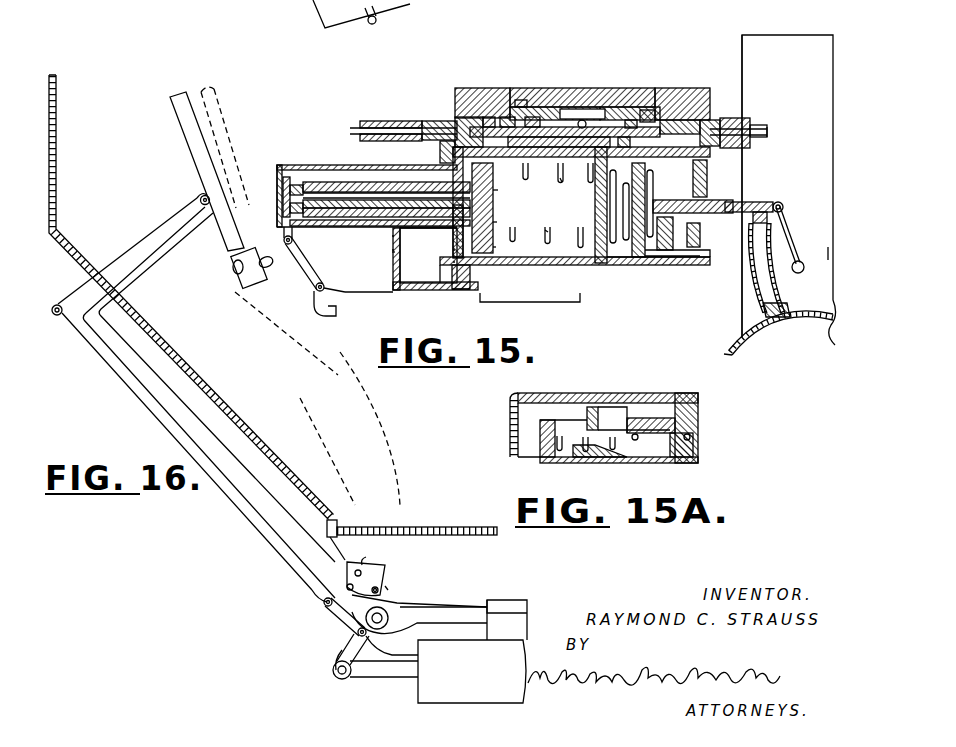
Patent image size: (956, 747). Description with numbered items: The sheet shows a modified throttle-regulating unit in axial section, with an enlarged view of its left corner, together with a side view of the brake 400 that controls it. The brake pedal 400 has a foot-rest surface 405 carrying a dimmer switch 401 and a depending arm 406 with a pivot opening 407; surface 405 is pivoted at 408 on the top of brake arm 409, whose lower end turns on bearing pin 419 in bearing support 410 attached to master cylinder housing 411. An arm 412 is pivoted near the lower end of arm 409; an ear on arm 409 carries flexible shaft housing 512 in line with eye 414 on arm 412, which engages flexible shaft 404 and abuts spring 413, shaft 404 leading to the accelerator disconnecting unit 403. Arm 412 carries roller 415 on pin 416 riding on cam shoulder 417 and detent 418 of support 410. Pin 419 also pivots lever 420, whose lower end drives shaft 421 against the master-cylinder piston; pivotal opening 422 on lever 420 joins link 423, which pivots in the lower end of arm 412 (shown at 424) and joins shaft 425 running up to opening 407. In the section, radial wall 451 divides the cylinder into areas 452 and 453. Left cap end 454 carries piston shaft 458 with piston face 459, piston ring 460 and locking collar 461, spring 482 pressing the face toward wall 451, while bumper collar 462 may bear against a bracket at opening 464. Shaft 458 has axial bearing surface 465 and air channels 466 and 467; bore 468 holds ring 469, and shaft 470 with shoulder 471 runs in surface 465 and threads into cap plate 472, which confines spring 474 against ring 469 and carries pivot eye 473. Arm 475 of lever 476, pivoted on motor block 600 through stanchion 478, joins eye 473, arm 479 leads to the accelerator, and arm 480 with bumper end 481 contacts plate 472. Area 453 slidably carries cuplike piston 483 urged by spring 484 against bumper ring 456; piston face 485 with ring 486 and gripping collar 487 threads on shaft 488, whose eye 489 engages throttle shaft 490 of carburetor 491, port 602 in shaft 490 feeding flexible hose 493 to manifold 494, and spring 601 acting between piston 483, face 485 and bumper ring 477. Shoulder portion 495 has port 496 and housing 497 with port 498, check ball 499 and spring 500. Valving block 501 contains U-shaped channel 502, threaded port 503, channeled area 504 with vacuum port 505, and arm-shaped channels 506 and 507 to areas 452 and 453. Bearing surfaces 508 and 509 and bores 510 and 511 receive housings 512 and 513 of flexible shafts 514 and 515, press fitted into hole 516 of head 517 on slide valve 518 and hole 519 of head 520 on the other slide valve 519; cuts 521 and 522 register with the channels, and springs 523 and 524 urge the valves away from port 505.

In FIG. 16, the brake pedal 400 is at (173, 133).
In FIG. 16, the dimmer switch 401 is at (235, 266).
In FIG. 15, the accelerator disconnecting unit 403 is at (730, 44).
In FIG. 15, the flexible shaft 404 is at (372, 24).
In FIG. 16, the flexible shaft 404 is at (335, 522).
In FIG. 16, the foot-rest surface 405 is at (195, 92).
In FIG. 16, the depending arm 406 is at (134, 229).
In FIG. 16, the pivot opening 407 is at (57, 316).
In FIG. 16, the pivot 408 is at (198, 185).
In FIG. 16, the brake arm 409 is at (144, 270).
In FIG. 16, the bearing support 410 is at (402, 602).
In FIG. 16, the master cylinder housing 411 is at (477, 602).
In FIG. 16, the arm 412 is at (340, 618).
In FIG. 16, the spring 413 is at (314, 590).
In FIG. 16, the eye 414 is at (385, 574).
In FIG. 16, the roller 415 is at (380, 570).
In FIG. 16, the pin 416 is at (377, 588).
In FIG. 16, the cam shoulder 417 is at (355, 633).
In FIG. 16, the detent 418 is at (387, 589).
In FIG. 16, the bearing pin 419 is at (401, 626).
In FIG. 16, the lever 420 is at (402, 652).
In FIG. 16, the shaft 421 is at (377, 676).
In FIG. 16, the pivotal opening 422 is at (334, 676).
In FIG. 16, the link 423 is at (332, 654).
In FIG. 16, the pivot 424 is at (320, 604).
In FIG. 16, the shaft 425 is at (242, 547).
In FIG. 15, the radial wall 451 is at (577, 279).
In FIG. 15, the cylinder area 452 is at (517, 267).
In FIG. 15, the cylinder area 453 is at (451, 230).
In FIG. 15, the left cap end 454 is at (453, 250).
In FIG. 15, the right bumper ring 456 is at (690, 245).
In FIG. 15, the piston shaft 458 is at (360, 224).
In FIG. 15A, the piston shaft 458 is at (700, 405).
In FIG. 15, the piston face 459 is at (497, 222).
In FIG. 15, the piston ring 460 is at (494, 247).
In FIG. 15, the locking collar 461 is at (498, 159).
In FIG. 15, the bumper collar 462 is at (342, 152).
In FIG. 15A, the bumper collar 462 is at (608, 405).
In FIG. 15, the opening 464 is at (392, 236).
In FIG. 15, the bearing surface 465 is at (393, 250).
In FIG. 15, the air channel 466 is at (446, 171).
In FIG. 15A, the air channel 466 is at (698, 437).
In FIG. 15, the air channel 467 is at (350, 252).
In FIG. 15, the bore 468 is at (498, 192).
In FIG. 15A, the bore 468 is at (728, 472).
In FIG. 15A, the ring 469 is at (621, 441).
In FIG. 15, the shaft 470 is at (497, 205).
In FIG. 15A, the shaft 470 is at (560, 462).
In FIG. 15, the raised shoulder 471 is at (386, 192).
In FIG. 15A, the raised shoulder 471 is at (615, 459).
In FIG. 15, the cap plate 472 is at (283, 199).
In FIG. 15A, the cap plate 472 is at (550, 417).
In FIG. 15, the pivot eye 473 is at (286, 230).
In FIG. 15, the spring 474 is at (292, 164).
In FIG. 15A, the spring 474 is at (587, 384).
In FIG. 15, the arm 475 is at (290, 271).
In FIG. 15, the lever 476 is at (342, 276).
In FIG. 15, the bumper ring 477 is at (700, 227).
In FIG. 15, the stanchion 478 is at (369, 281).
In FIG. 15, the arm 479 is at (341, 307).
In FIG. 15, the arm 480 is at (384, 164).
In FIG. 15A, the arm 480 is at (688, 394).
In FIG. 15, the bumper end 481 is at (283, 179).
In FIG. 15A, the bumper end 481 is at (510, 405).
In FIG. 15, the spring 482 is at (553, 202).
In FIG. 15, the cuplike piston 483 is at (693, 211).
In FIG. 15, the spring 484 is at (553, 229).
In FIG. 15, the piston face 485 is at (655, 268).
In FIG. 15, the piston ring 486 is at (690, 170).
In FIG. 15, the gripping collar 487 is at (700, 163).
In FIG. 15, the shaft 488 is at (782, 196).
In FIG. 15, the eye 489 is at (786, 209).
In FIG. 15, the throttle shaft 490 is at (793, 240).
In FIG. 15, the carburetor 491 is at (748, 165).
In FIG. 15, the flexible hose 493 is at (784, 285).
In FIG. 15, the manifold 494 is at (778, 334).
In FIG. 15, the shoulder portion 495 is at (453, 276).
In FIG. 15, the port 496 is at (453, 264).
In FIG. 15, the housing 497 is at (790, 222).
In FIG. 15, the port 498 is at (462, 291).
In FIG. 15, the check ball 499 is at (456, 293).
In FIG. 15, the spring 500 is at (450, 288).
In FIG. 15, the valving block 501 is at (469, 117).
In FIG. 15, the U-shaped channel 502 is at (646, 110).
In FIG. 15, the threaded port 503 is at (590, 107).
In FIG. 15, the channeled area 504 is at (584, 120).
In FIG. 15, the port 505 is at (568, 127).
In FIG. 15, the arm-shaped channel 506 is at (560, 178).
In FIG. 15, the arm-shaped channel 507 is at (631, 198).
In FIG. 15, the bearing surface 508 is at (524, 88).
In FIG. 15, the bearing surface 509 is at (675, 88).
In FIG. 15, the bore 510 is at (482, 88).
In FIG. 15, the bore 511 is at (717, 119).
In FIG. 15, the flexible shaft housing 512 is at (450, 119).
In FIG. 16, the flexible shaft housing 512 is at (338, 530).
In FIG. 15, the flexible shaft housing 513 is at (748, 115).
In FIG. 15, the flexible shaft 514 is at (428, 121).
In FIG. 15, the flexible shaft 515 is at (761, 124).
In FIG. 15, the hole 516 is at (444, 150).
In FIG. 15, the enlarged head 517 is at (488, 117).
In FIG. 15, the slide valve 518 is at (536, 117).
In FIG. 15, the slide valve 519 is at (624, 137).
In FIG. 15, the enlarged head 520 is at (761, 122).
In FIG. 15, the cross communicating cut 521 is at (510, 117).
In FIG. 15, the cross communicating cut 522 is at (630, 120).
In FIG. 15, the compression spring 523 is at (520, 100).
In FIG. 15, the compression spring 524 is at (682, 120).
In FIG. 15, the motor block 600 is at (530, 304).
In FIG. 15, the spring 601 is at (635, 270).
In FIG. 15, the communicating port 602 is at (749, 198).